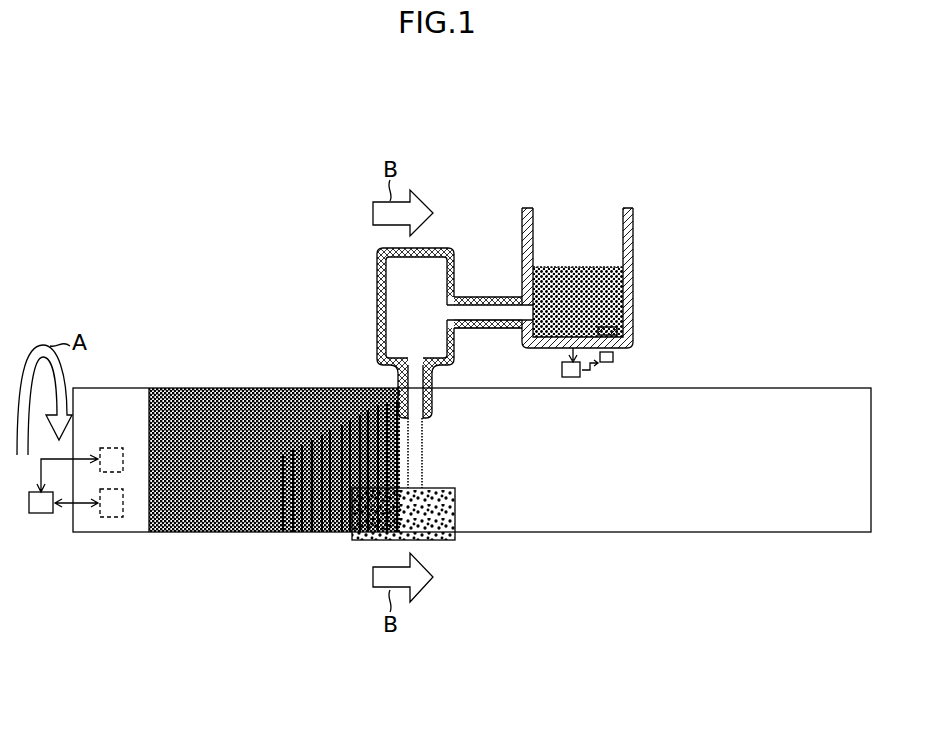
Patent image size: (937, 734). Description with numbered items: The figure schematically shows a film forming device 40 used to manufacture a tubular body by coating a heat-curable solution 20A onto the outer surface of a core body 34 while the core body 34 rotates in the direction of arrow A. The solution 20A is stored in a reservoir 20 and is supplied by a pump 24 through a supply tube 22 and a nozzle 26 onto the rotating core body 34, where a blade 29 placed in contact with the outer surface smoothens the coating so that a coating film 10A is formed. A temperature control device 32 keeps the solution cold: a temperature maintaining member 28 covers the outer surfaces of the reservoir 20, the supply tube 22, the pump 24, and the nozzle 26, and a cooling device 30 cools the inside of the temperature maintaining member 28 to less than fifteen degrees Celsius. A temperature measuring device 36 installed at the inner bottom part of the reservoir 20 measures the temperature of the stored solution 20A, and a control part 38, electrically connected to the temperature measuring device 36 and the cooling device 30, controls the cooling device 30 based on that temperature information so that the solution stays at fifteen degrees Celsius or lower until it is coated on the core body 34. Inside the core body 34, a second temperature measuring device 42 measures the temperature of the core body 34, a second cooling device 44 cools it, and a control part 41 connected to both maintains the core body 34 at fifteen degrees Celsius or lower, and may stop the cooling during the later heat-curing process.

The coating film 10A is at (198, 398).
The reservoir 20 is at (633, 213).
The heat-curable solution 20A is at (620, 306).
The supply tube 22 is at (470, 312).
The pump 24 is at (377, 283).
The nozzle 26 is at (398, 380).
The temperature maintaining member 28 is at (470, 330).
The blade 29 is at (362, 541).
The cooling device 30 is at (614, 358).
The temperature control device 32 is at (685, 347).
The core body 34 is at (840, 387).
The temperature measuring device 36 is at (618, 331).
The control part 38 is at (562, 369).
The film forming device 40 is at (626, 158).
The control part 41 is at (40, 515).
The temperature measuring device 42 is at (106, 522).
The cooling device 44 is at (108, 448).